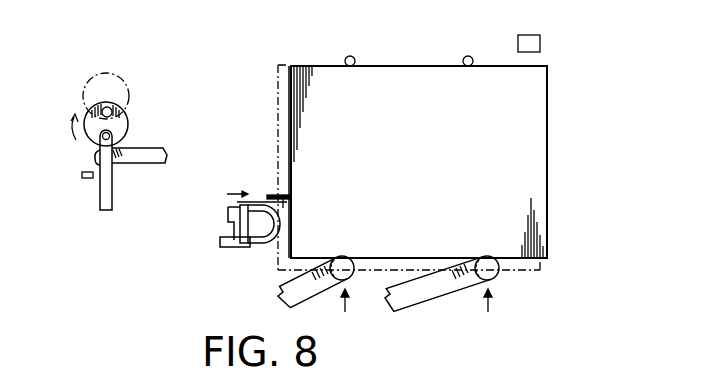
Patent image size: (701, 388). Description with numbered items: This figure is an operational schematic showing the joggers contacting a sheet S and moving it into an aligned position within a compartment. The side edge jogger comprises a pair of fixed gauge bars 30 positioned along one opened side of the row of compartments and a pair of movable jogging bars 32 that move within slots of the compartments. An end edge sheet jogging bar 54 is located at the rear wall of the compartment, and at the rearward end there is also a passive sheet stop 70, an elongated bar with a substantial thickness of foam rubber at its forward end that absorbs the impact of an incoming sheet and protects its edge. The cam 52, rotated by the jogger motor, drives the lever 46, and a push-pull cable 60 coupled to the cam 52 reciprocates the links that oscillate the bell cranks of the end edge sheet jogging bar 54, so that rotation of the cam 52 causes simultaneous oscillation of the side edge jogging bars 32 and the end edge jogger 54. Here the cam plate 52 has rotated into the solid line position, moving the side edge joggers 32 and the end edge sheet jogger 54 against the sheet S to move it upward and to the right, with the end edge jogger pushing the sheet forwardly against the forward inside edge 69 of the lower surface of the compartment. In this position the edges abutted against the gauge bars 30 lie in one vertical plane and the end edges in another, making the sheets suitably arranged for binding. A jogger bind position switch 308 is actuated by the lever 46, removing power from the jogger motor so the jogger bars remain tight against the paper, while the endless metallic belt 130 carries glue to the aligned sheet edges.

The sheet S is at (415, 66).
The forward inside edge 69 is at (547, 138).
The fixed gauge bars 30 is at (355, 58).
The endless metallic belt 130 is at (521, 34).
The end edge sheet jogging bar 54 is at (268, 196).
The passive sheet stop 70 is at (258, 247).
The movable jogging bars 32 is at (357, 264).
The cam 52 is at (124, 117).
The lever 46 is at (150, 142).
The push-pull cable 60 is at (112, 177).
The jogger bind position switch 308 is at (86, 178).